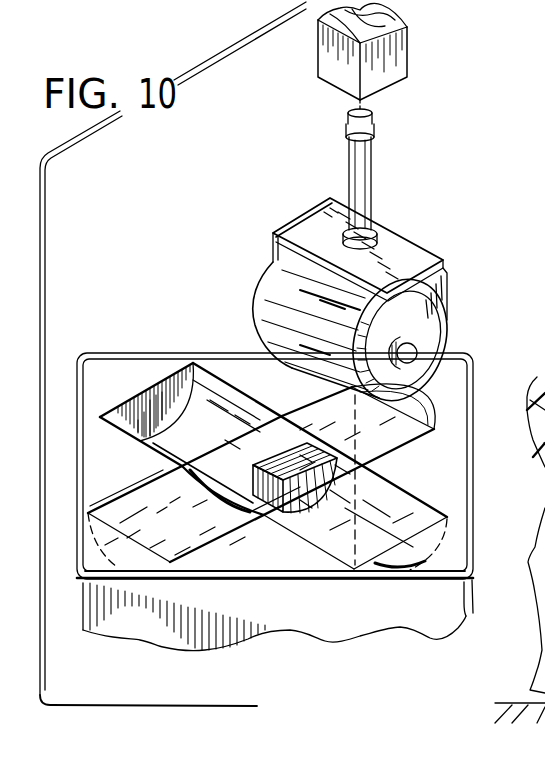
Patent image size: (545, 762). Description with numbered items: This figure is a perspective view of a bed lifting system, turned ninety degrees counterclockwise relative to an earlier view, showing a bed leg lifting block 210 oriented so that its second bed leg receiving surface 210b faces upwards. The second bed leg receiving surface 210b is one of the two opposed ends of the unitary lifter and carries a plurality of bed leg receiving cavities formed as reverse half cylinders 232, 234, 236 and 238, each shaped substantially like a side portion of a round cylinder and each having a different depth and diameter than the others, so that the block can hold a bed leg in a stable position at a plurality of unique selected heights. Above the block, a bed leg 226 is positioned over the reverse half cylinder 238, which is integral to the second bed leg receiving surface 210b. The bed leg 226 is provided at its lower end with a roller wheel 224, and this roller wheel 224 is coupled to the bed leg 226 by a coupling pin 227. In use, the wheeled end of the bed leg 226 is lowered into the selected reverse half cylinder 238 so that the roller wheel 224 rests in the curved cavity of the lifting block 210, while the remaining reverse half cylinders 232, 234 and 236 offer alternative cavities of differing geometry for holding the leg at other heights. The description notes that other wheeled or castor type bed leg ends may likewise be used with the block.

The bed leg lifting block 210 is at (182, 676).
The second bed leg receiving surface 210b is at (100, 355).
The roller wheel 224 is at (434, 205).
The bed leg 226 is at (408, 34).
The coupling pin 227 is at (344, 162).
The reverse half cylinder 232 is at (200, 522).
The reverse half cylinder 234 is at (200, 413).
The reverse half cylinder 236 is at (367, 428).
The reverse half cylinder 238 is at (397, 517).